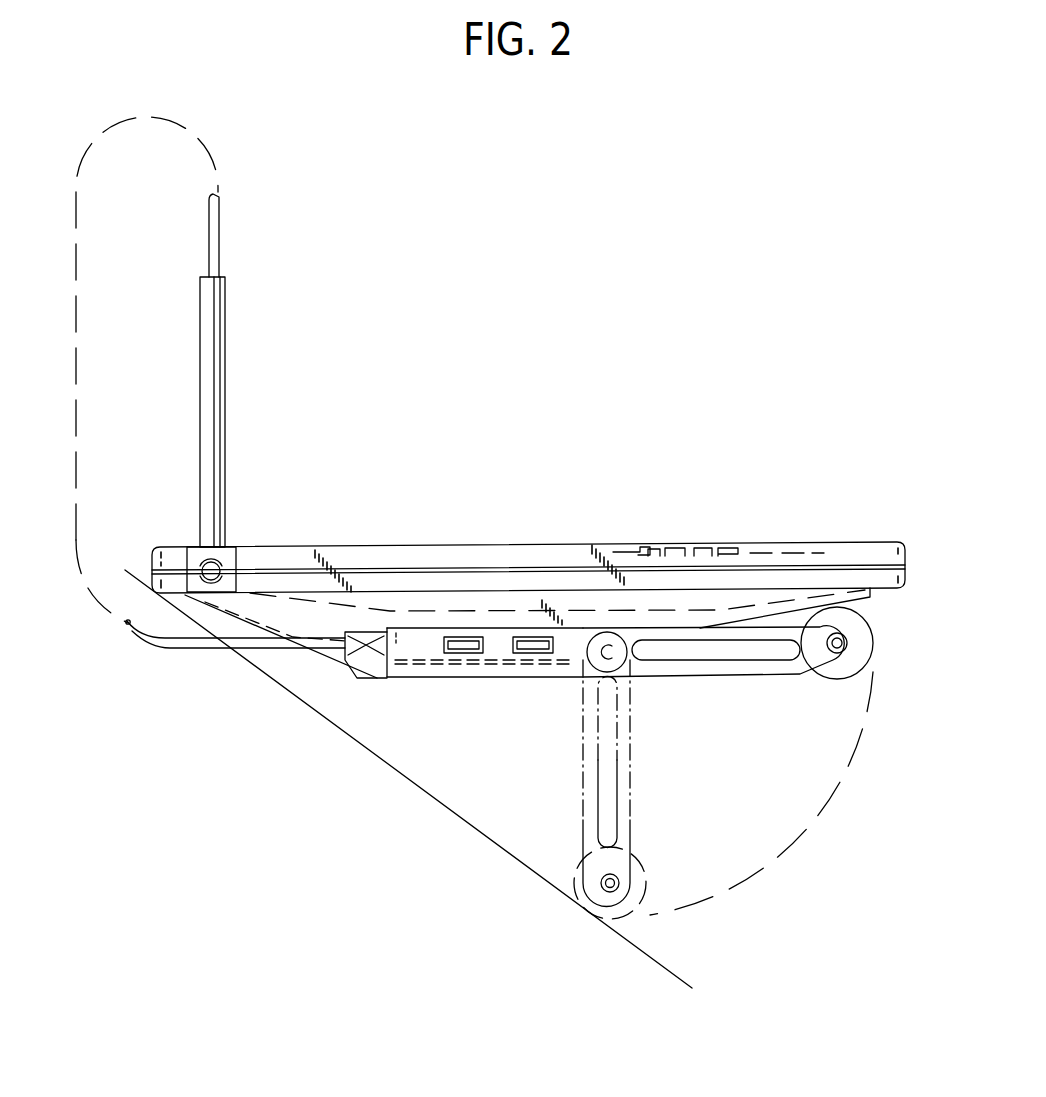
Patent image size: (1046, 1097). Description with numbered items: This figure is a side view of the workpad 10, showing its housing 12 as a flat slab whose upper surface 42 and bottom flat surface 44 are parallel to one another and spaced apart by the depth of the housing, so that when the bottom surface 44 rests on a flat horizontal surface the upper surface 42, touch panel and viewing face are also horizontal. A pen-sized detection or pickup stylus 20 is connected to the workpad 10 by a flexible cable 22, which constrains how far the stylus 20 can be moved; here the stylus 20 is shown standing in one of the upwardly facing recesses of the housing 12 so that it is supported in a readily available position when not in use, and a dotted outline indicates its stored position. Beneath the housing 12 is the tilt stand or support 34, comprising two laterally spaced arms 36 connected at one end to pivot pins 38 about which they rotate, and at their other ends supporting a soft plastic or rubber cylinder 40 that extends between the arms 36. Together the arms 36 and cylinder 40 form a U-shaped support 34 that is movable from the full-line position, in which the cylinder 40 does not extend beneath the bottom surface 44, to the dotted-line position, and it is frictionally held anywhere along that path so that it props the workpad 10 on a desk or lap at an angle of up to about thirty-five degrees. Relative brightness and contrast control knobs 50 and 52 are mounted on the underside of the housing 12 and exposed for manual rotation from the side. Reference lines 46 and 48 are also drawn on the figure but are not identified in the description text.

The workpad 10 is at (520, 458).
The housing 12 is at (902, 542).
The detection or pickup stylus 20 is at (225, 340).
The cable 22 is at (192, 648).
The tilt stand or support 34 is at (768, 677).
The arms 36 is at (718, 668).
The pivot pins 38 is at (615, 665).
The cylinder 40 is at (867, 627).
The upper surface 42 is at (300, 548).
The bottom flat surface 44 is at (477, 678).
The link 46 is at (330, 657).
The pivot line 48 is at (667, 965).
The brightness control knob 50 is at (452, 653).
The contrast control knob 52 is at (527, 653).